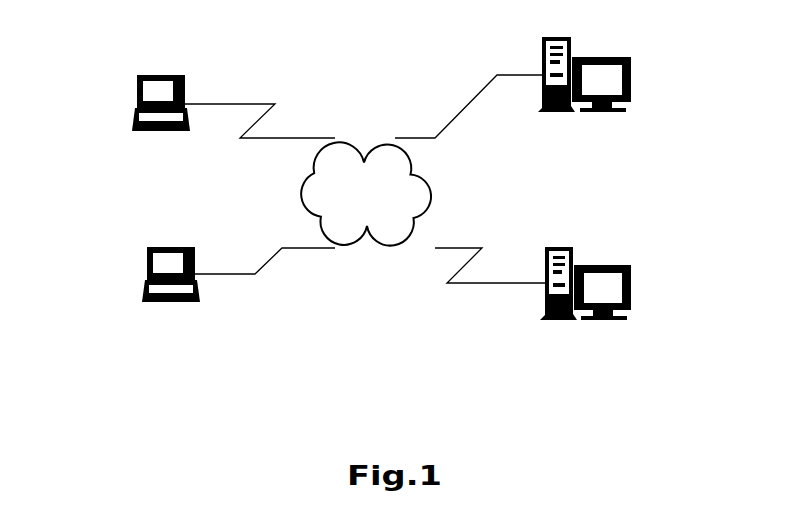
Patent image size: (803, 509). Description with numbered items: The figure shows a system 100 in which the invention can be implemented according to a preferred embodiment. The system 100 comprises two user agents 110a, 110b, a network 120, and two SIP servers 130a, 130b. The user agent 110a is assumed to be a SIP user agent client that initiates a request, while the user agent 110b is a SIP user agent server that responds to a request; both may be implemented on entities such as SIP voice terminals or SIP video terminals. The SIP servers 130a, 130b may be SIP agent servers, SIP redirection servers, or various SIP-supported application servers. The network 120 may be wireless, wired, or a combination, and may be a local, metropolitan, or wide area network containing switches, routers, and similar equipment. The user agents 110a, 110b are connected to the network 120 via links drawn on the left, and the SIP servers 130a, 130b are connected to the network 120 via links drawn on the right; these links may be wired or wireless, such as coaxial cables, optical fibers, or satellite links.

The system 100 is at (340, 325).
The user agent 110a is at (186, 75).
The user agent 110b is at (173, 247).
The network 120 is at (342, 138).
The SIP server 130a is at (603, 57).
The SIP server 130b is at (603, 265).